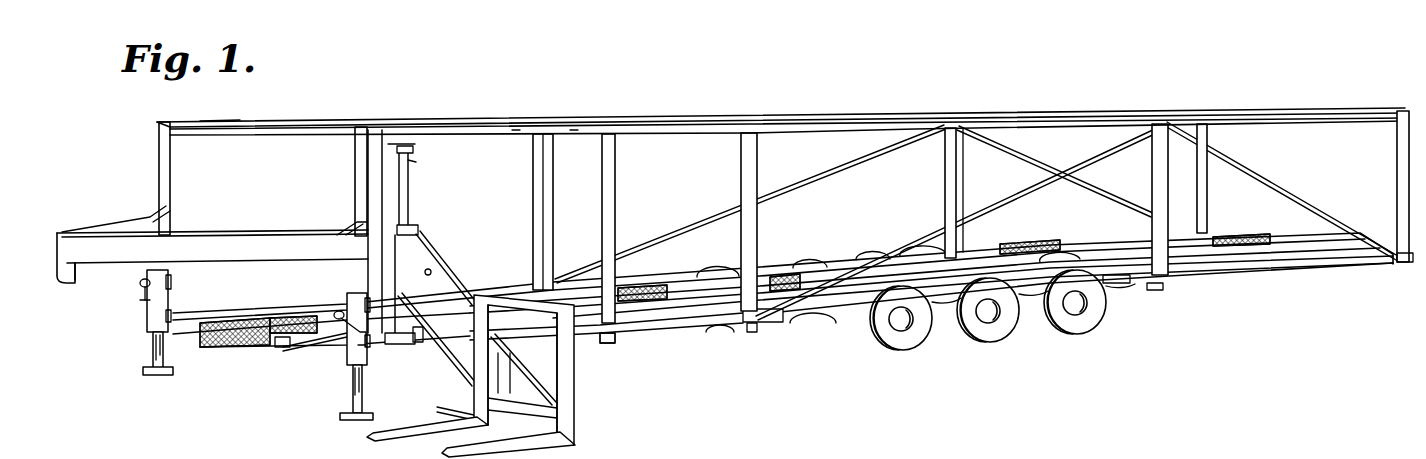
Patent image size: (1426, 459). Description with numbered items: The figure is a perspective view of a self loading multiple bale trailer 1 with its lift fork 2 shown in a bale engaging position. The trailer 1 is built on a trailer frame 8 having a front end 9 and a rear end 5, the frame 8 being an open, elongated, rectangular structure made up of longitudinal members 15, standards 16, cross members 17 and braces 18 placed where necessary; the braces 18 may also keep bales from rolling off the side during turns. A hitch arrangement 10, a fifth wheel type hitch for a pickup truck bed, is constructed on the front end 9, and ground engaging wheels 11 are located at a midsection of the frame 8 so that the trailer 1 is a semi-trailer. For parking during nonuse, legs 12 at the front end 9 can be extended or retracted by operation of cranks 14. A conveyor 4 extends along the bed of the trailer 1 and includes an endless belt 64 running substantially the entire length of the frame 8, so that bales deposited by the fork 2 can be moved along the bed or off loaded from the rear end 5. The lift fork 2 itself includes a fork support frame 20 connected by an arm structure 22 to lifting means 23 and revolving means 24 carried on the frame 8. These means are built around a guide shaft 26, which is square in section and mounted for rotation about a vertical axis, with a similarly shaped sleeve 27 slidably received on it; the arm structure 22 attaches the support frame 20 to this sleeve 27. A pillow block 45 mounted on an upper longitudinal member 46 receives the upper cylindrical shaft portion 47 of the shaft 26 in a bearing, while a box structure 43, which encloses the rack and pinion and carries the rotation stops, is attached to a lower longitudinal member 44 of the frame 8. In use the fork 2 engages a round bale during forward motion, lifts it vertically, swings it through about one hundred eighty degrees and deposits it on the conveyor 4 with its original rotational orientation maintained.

The self loading multiple bale trailer 1 is at (803, 100).
The lift fork 2 is at (578, 416).
The conveyor 4 is at (1090, 255).
The rear end 5 is at (1382, 112).
The trailer frame 8 is at (953, 112).
The front end 9 is at (242, 125).
The hitch arrangement 10 is at (100, 232).
The ground engaging wheels 11 is at (905, 352).
The legs 12 is at (140, 372).
The cranks 14 is at (140, 295).
The longitudinal members 15 is at (574, 132).
The standards 16 is at (360, 180).
The cross members 17 is at (296, 340).
The braces 18 is at (710, 212).
The fork support frame 20 is at (574, 357).
The arm structure 22 is at (455, 284).
The lifting means 23 is at (430, 270).
The revolving means 24 is at (394, 347).
The guide shaft 26 is at (410, 194).
The sleeve 27 is at (420, 234).
The box structure 43 is at (422, 344).
The lower longitudinal member 44 is at (667, 322).
The pillow block 45 is at (416, 149).
The upper longitudinal member 46 is at (515, 131).
The upper cylindrical shaft portion 47 is at (418, 163).
The endless belt 64 is at (688, 292).